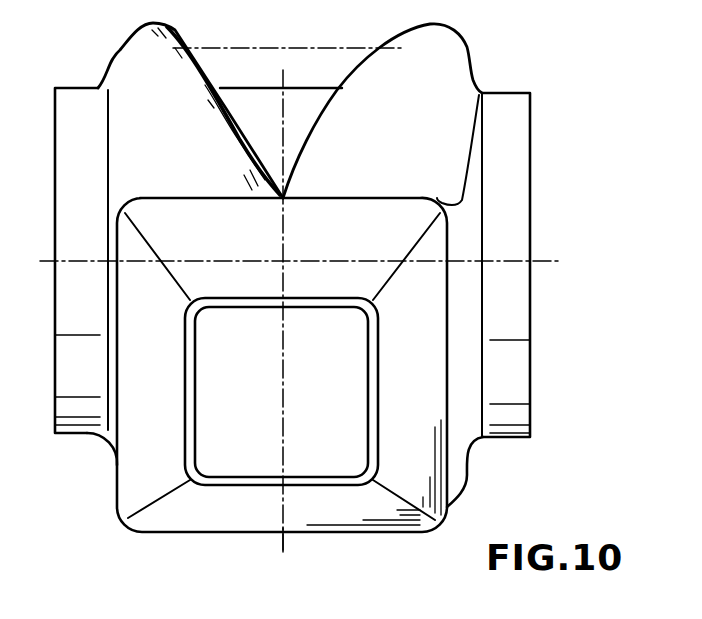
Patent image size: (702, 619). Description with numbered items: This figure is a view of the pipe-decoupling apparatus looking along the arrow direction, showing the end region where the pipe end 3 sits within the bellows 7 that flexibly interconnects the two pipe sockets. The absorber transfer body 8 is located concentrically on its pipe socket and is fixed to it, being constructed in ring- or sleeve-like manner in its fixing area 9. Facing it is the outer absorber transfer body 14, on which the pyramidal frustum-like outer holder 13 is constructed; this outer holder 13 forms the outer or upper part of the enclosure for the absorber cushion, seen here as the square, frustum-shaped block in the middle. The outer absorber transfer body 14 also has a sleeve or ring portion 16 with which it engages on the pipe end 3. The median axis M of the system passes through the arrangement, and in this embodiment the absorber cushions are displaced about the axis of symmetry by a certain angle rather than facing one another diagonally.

The pipe end 3 is at (530, 165).
The bellows 7 is at (327, 67).
The absorber transfer body 8 is at (137, 60).
The fixing area 9 is at (87, 438).
The outer holder 13 is at (130, 478).
The outer absorber transfer body 14 is at (207, 532).
The sleeve or ring portion 16 is at (513, 440).
The median axis M is at (285, 538).